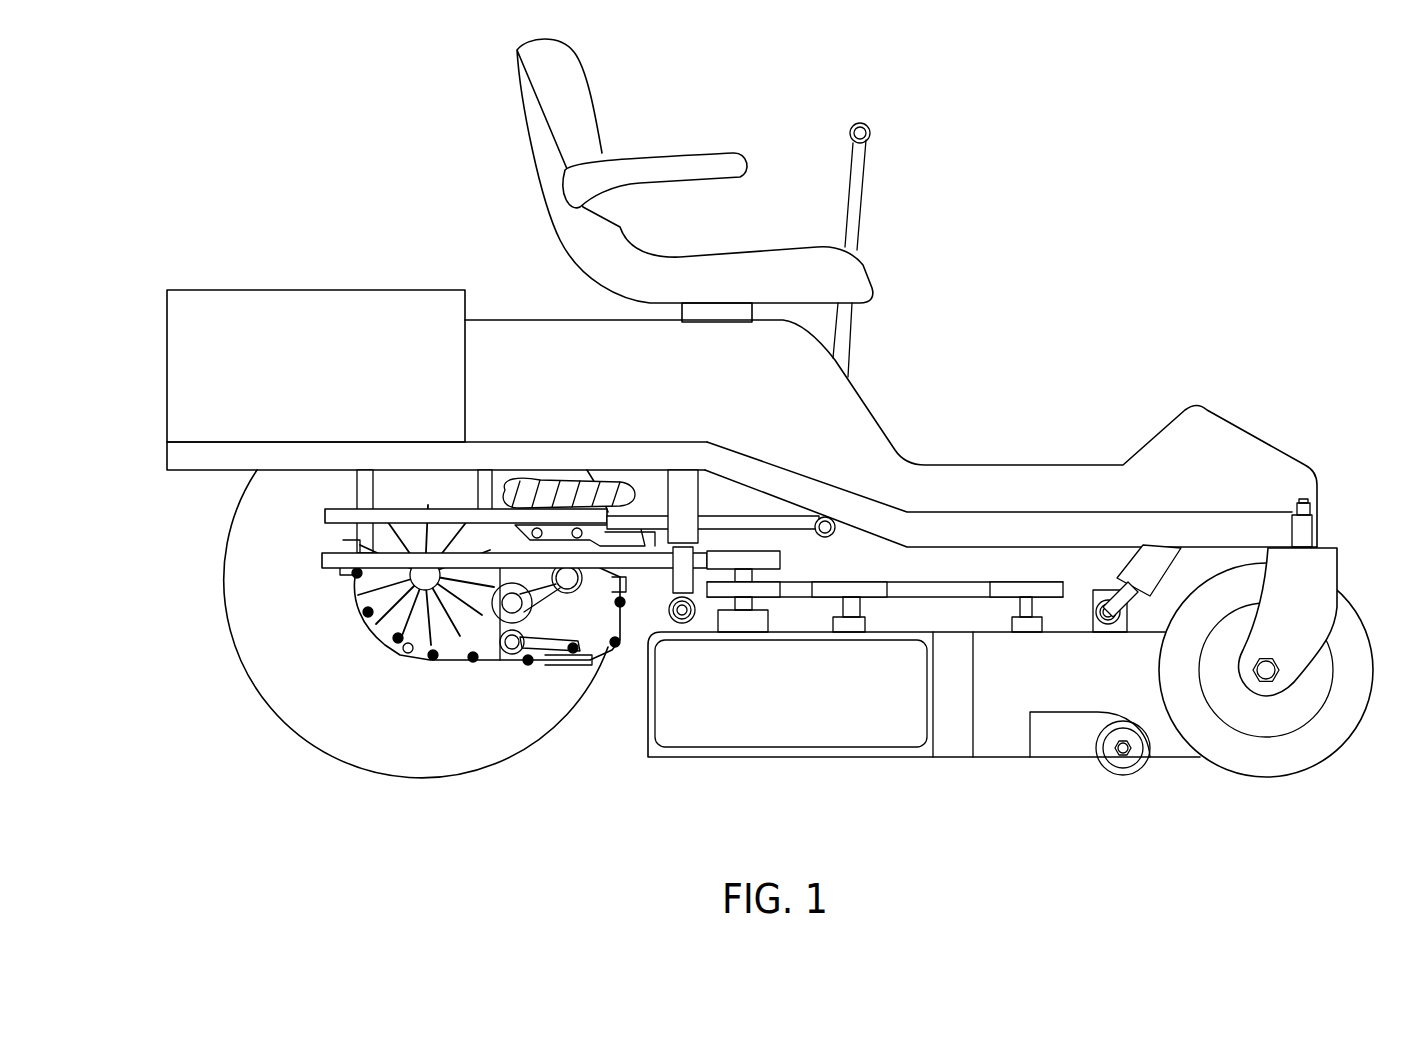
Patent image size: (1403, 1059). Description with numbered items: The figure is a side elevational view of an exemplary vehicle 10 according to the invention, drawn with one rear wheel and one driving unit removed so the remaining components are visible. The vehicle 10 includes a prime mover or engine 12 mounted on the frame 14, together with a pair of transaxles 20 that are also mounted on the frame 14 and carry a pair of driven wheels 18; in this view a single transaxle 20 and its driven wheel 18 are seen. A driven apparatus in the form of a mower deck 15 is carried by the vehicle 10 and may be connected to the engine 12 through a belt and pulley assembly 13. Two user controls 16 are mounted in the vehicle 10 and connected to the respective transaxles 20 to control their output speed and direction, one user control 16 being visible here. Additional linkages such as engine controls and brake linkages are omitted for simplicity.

The vehicle 10 is at (1067, 282).
The engine 12 is at (336, 377).
The belt and pulley assembly 13 is at (797, 568).
The frame 14 is at (968, 513).
The mower deck 15 is at (1083, 685).
The user control 16 is at (865, 183).
The driven wheel 18 is at (442, 736).
The transaxle 20 is at (346, 647).